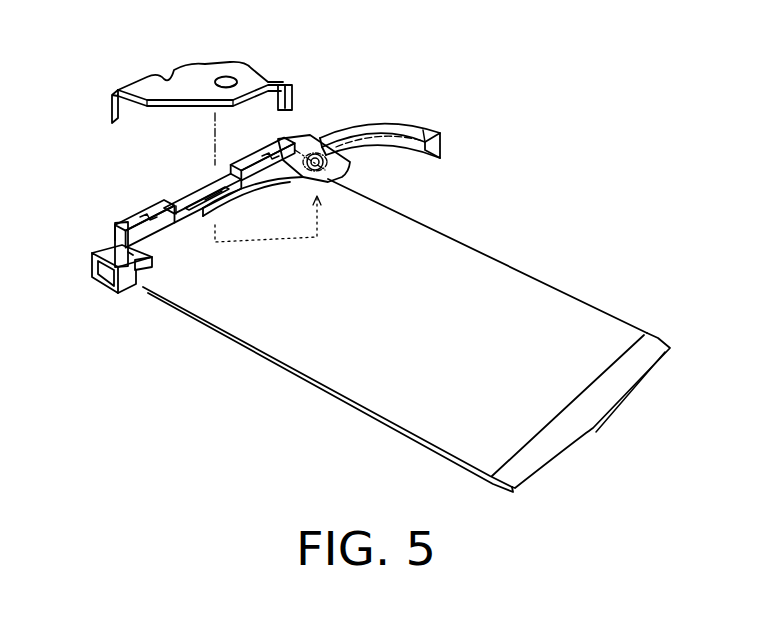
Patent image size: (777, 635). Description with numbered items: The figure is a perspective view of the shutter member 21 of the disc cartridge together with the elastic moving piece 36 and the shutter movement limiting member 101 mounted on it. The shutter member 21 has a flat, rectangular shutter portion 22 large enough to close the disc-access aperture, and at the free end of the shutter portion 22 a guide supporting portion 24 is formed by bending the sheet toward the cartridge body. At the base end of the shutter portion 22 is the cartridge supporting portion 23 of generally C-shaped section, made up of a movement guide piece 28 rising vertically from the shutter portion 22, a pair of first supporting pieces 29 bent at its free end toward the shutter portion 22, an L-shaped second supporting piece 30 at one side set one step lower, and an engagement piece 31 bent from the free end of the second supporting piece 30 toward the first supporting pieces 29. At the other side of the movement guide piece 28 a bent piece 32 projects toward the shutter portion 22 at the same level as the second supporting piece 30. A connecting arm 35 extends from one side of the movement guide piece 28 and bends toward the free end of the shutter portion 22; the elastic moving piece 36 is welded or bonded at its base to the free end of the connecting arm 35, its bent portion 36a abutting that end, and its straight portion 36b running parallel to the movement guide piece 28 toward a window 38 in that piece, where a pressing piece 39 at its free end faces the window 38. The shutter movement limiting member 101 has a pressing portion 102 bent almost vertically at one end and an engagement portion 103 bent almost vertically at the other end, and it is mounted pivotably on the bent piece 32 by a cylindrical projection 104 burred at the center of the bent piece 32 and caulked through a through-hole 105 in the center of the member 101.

The shutter member 21 is at (482, 258).
The shutter portion 22 is at (542, 287).
The cartridge supporting portion 23 is at (193, 187).
The guide supporting portion 24 is at (648, 350).
The movement guide piece 28 is at (123, 242).
The first supporting pieces 29 is at (138, 213).
The second supporting piece 30 is at (92, 260).
The engagement piece 31 is at (147, 268).
The bent piece 32 is at (298, 138).
The connecting arm 35 is at (436, 133).
The elastic moving piece 36 is at (379, 150).
The bent portion 36a is at (450, 147).
The straight portion 36b is at (247, 193).
The window 38 is at (182, 212).
The pressing piece 39 is at (213, 212).
The shutter movement limiting member 101 is at (182, 71).
The pressing portion 102 is at (111, 105).
The engagement portion 103 is at (295, 97).
The cylindrical projection 104 is at (328, 177).
The through-hole 105 is at (233, 78).